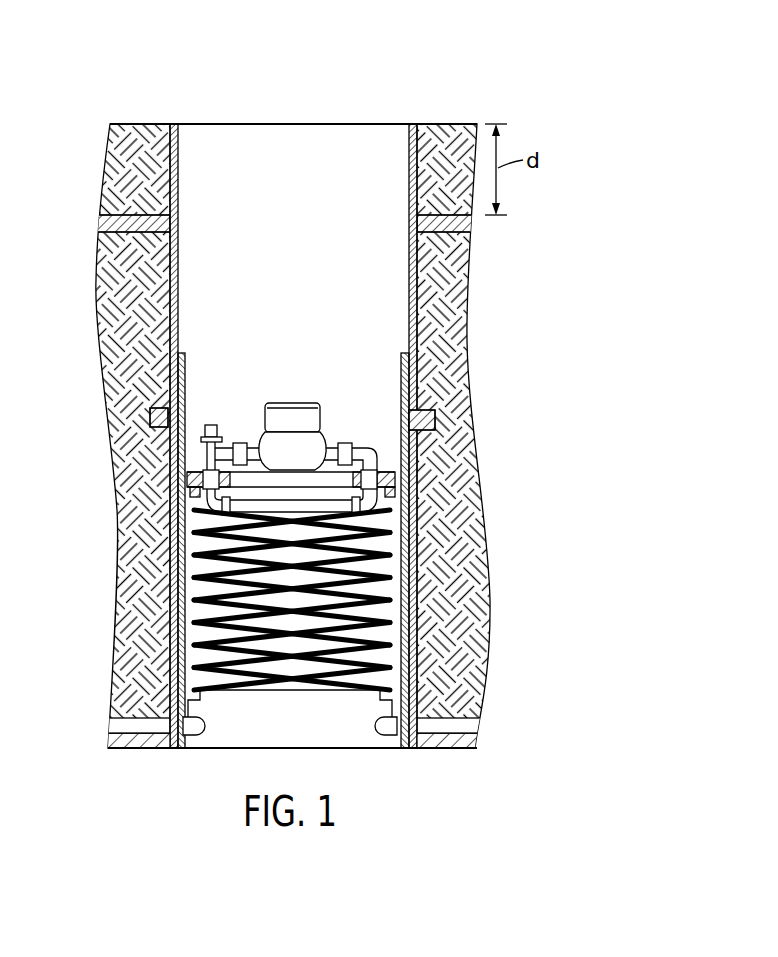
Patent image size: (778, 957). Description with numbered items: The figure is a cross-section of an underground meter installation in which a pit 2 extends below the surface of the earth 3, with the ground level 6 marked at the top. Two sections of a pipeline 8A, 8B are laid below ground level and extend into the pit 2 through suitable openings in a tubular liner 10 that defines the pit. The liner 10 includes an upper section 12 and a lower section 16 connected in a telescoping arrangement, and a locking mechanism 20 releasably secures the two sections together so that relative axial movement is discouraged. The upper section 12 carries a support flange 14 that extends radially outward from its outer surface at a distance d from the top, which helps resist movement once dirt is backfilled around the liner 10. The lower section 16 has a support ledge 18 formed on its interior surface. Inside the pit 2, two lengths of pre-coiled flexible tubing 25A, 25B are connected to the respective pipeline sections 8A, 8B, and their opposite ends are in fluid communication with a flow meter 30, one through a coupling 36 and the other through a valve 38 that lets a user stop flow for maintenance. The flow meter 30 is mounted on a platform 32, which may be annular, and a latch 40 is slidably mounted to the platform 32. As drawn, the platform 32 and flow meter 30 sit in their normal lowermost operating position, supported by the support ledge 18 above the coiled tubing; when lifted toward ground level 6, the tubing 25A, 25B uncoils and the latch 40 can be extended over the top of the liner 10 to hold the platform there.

The pit 2 is at (388, 59).
The earth 3 is at (165, 307).
The ground level 6 is at (146, 124).
The pipeline section 8A is at (120, 727).
The pipeline section 8B is at (470, 727).
The tubular liner 10 is at (246, 127).
The upper section 12 is at (175, 265).
The support flange 14 is at (103, 223).
The lower section 16 is at (184, 395).
The support ledge 18 is at (402, 492).
The locking mechanism 20 is at (420, 423).
The pre-coiled flexible tubing 25A is at (395, 575).
The pre-coiled flexible tubing 25B is at (388, 600).
The flow meter 30 is at (292, 440).
The platform 32 is at (318, 482).
The coupling 36 is at (370, 470).
The valve 38 is at (203, 455).
The latch 40 is at (185, 480).